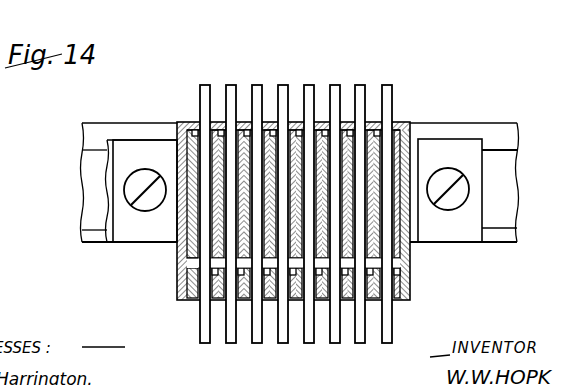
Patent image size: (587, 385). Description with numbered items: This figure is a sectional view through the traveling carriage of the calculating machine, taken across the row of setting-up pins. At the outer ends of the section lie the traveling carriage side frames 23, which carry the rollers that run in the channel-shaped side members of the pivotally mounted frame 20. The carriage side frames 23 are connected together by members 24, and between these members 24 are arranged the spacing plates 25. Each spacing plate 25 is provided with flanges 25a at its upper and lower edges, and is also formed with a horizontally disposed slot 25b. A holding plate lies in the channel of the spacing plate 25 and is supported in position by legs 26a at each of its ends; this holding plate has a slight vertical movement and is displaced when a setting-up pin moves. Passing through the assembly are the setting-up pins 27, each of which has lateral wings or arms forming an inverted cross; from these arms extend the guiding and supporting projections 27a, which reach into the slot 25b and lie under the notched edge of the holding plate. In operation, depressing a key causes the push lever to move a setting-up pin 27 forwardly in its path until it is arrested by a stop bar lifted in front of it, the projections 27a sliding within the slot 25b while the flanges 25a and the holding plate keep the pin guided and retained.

The frame 20 is at (500, 160).
The traveling carriage side frames 23 is at (146, 230).
The members 24 is at (121, 213).
The spacing plates 25 is at (285, 122).
The flanges 25a is at (172, 316).
The horizontally disposed slot 25b is at (203, 282).
The legs 26a is at (290, 288).
The setting-up pin 27 is at (362, 85).
The guiding and supporting projections 27a is at (383, 262).